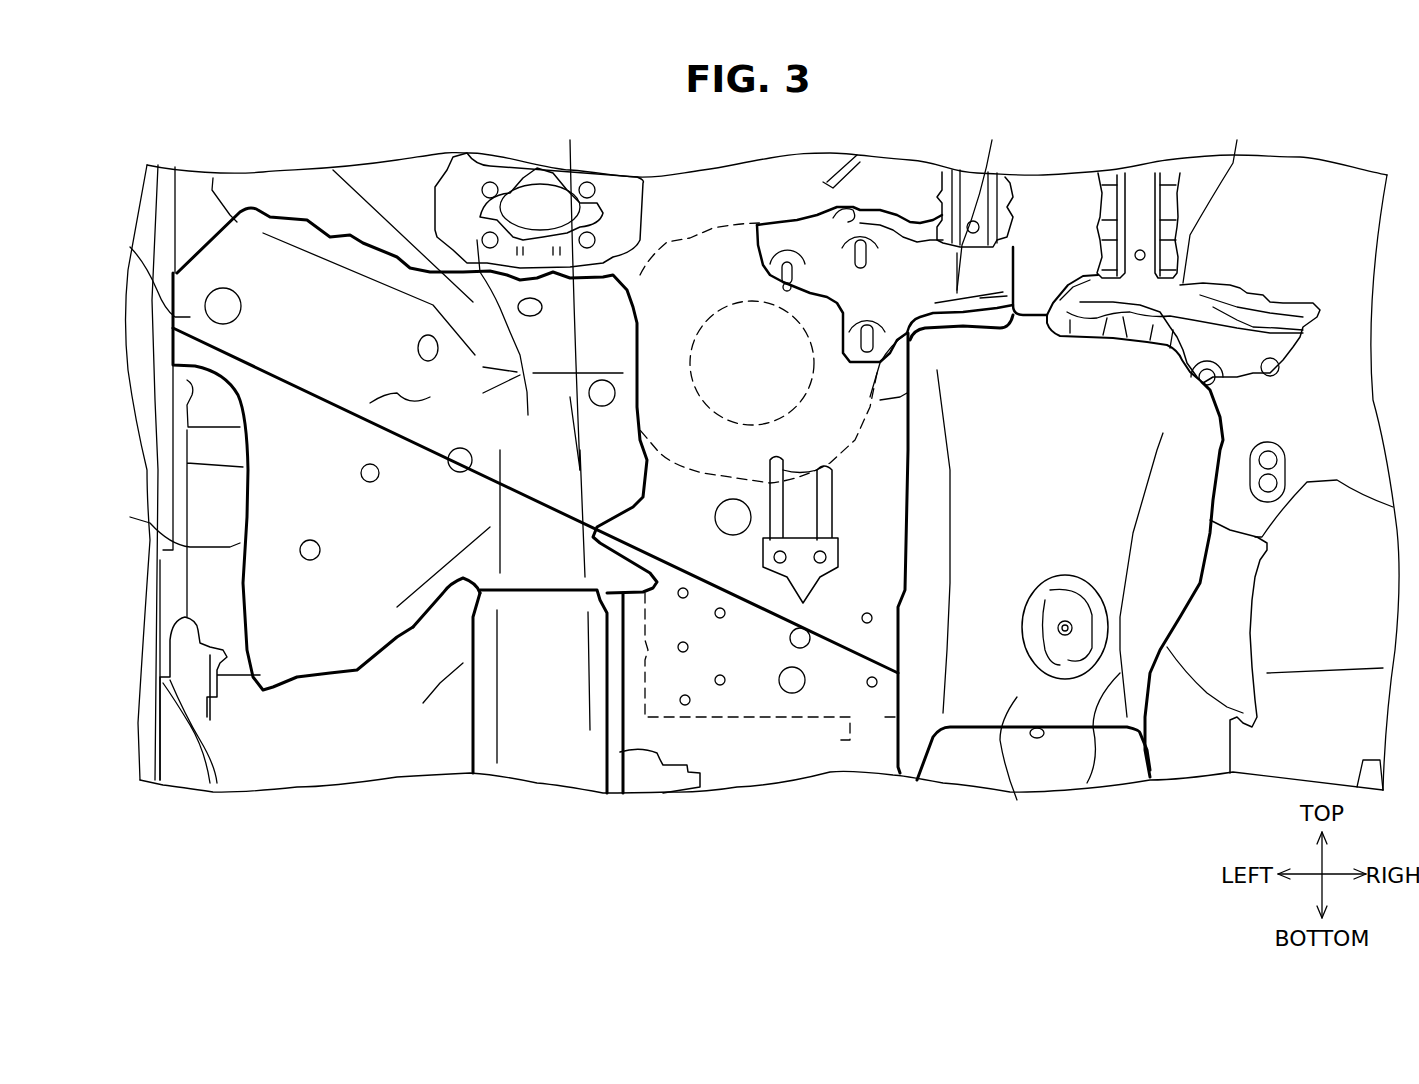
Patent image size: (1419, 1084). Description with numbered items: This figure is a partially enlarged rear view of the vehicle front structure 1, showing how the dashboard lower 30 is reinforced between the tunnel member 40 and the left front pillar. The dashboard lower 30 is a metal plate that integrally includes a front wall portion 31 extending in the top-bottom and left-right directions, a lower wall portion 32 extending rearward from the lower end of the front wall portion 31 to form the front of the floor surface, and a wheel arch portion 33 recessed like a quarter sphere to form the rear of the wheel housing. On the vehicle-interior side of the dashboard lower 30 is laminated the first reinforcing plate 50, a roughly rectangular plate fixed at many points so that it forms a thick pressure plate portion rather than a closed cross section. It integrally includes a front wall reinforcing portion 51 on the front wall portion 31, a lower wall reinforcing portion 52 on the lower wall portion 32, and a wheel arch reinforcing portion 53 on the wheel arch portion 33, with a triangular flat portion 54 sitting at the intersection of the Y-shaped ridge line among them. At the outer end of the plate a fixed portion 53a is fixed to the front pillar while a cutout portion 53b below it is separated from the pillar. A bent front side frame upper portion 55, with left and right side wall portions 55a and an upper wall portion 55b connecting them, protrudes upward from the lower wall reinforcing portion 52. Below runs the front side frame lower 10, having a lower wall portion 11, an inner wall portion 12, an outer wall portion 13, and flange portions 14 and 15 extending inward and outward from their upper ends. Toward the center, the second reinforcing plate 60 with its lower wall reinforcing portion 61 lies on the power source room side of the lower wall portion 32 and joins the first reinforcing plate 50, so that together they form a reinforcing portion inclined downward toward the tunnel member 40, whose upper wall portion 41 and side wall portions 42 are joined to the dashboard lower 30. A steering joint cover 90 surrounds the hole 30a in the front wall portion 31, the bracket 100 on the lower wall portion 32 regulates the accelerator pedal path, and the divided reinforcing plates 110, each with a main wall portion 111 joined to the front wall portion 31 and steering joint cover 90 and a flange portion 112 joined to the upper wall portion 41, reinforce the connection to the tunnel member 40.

The vehicle front structure 1 is at (1093, 133).
The front side frame lower 10 is at (501, 852).
The lower wall portion 11 is at (543, 753).
The inner wall portion 12 is at (597, 700).
The outer wall portion 13 is at (487, 720).
The flange portion 14 is at (657, 753).
The flange portion 15 is at (423, 703).
The dashboard lower 30 is at (240, 193).
The hole 30a is at (743, 302).
The front wall portion 31 is at (273, 198).
The lower wall portion 32 is at (317, 763).
The wheel arch portion 33 is at (177, 470).
The tunnel member 40 is at (1145, 608).
The upper wall portion 41 is at (1020, 700).
The side wall portion 42 is at (1095, 857).
The first reinforcing plate 50 is at (305, 141).
The front wall reinforcing portion 51 is at (493, 378).
The lower wall reinforcing portion 52 is at (608, 433).
The wheel arch reinforcing portion 53 is at (200, 360).
The fixed portion 53a is at (130, 247).
The cutout portion 53b is at (215, 550).
The flat portion 54 is at (430, 272).
The front side frame upper portion 55 is at (477, 240).
The side wall portion 55a is at (490, 527).
The upper wall portion 55b is at (493, 535).
The second reinforcing plate 60 is at (770, 676).
The lower wall reinforcing portion 61 is at (750, 697).
The steering joint cover 90 is at (665, 300).
The bracket 100 is at (818, 580).
The reinforcing plate 110 is at (1112, 222).
The main wall portion 111 is at (890, 257).
The flange portion 112 is at (1141, 245).